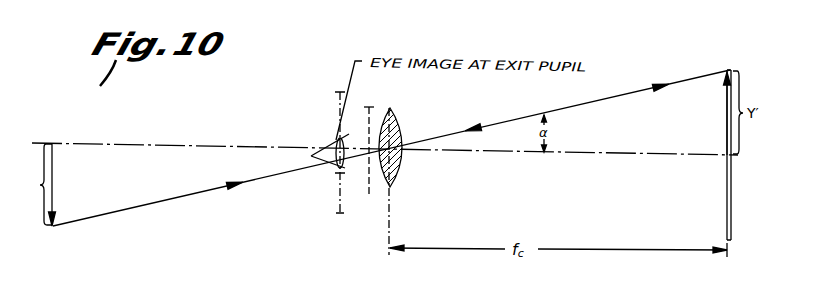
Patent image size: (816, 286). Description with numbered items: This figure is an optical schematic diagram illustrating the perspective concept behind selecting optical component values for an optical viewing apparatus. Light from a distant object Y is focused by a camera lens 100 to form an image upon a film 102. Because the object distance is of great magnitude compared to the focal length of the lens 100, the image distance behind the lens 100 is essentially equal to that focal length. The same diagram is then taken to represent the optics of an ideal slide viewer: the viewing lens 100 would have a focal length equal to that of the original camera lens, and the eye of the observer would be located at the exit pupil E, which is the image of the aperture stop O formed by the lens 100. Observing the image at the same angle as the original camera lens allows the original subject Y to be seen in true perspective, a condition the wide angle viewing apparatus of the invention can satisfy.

The camera lens 100 is at (399, 118).
The film 102 is at (733, 213).
The distant object Y is at (38, 184).
The exit pupil E is at (339, 214).
The aperture stop O is at (369, 196).